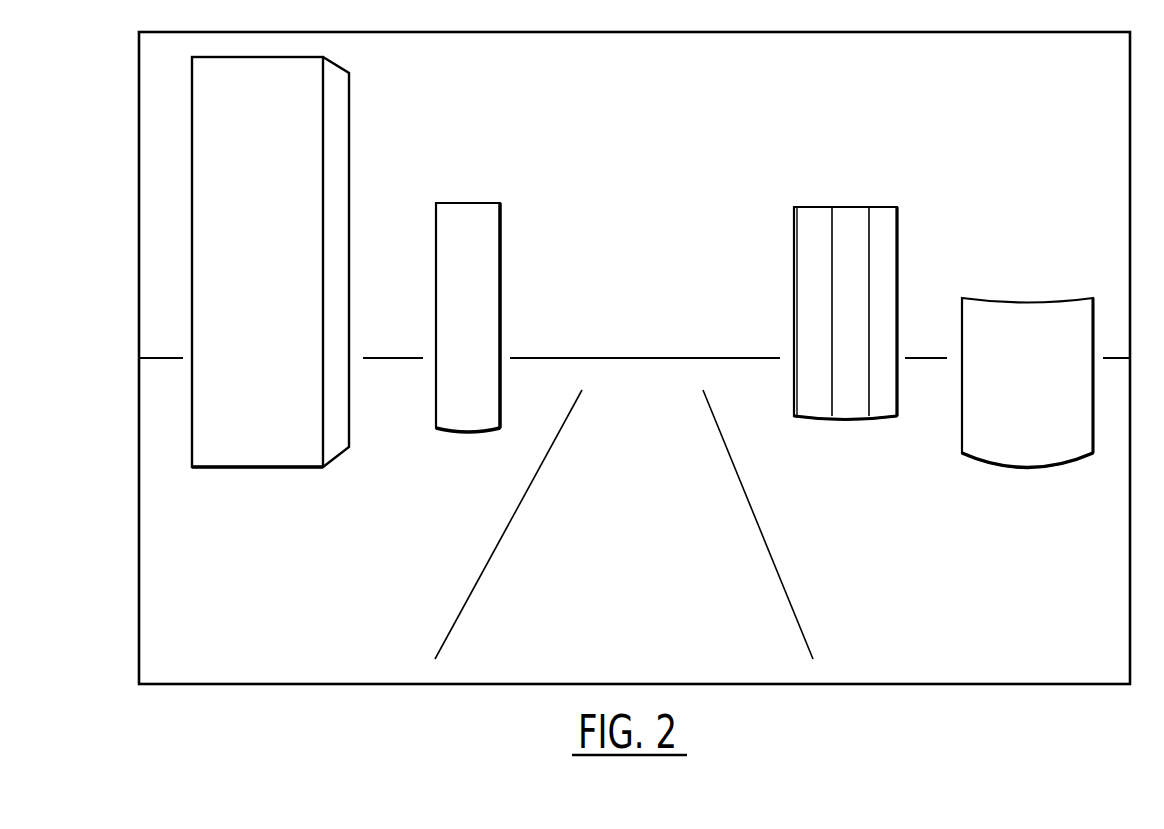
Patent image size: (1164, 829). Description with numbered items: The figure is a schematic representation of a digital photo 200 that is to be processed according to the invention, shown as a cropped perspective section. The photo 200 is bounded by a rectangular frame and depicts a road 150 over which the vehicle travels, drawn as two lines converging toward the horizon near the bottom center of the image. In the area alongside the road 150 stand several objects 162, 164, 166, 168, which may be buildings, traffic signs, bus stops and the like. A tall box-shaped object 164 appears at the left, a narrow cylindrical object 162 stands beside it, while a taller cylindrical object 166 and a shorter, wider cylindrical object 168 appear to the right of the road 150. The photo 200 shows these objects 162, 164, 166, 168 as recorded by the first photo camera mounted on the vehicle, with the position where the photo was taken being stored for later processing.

The road 150 is at (635, 525).
The object 162 is at (457, 422).
The object 164 is at (251, 456).
The object 166 is at (849, 408).
The object 168 is at (1028, 453).
The photo 200 is at (1082, 660).